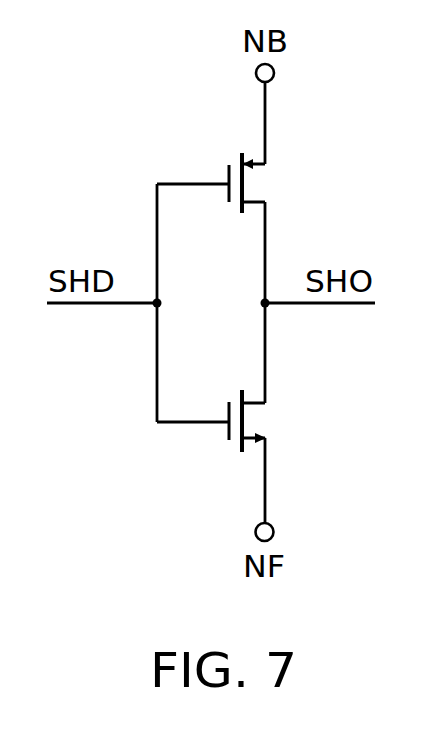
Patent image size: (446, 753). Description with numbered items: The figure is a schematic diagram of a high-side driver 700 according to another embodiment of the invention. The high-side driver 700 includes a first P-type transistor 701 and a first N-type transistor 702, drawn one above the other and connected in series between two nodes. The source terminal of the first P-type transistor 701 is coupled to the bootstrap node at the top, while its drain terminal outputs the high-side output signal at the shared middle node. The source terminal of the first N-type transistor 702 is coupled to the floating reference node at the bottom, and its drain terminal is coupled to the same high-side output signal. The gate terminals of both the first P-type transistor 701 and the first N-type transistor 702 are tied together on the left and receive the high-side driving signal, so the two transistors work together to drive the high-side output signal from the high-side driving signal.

The high-side driver 700 is at (133, 567).
The first P-type transistor 701 is at (256, 183).
The first N-type transistor 702 is at (256, 420).